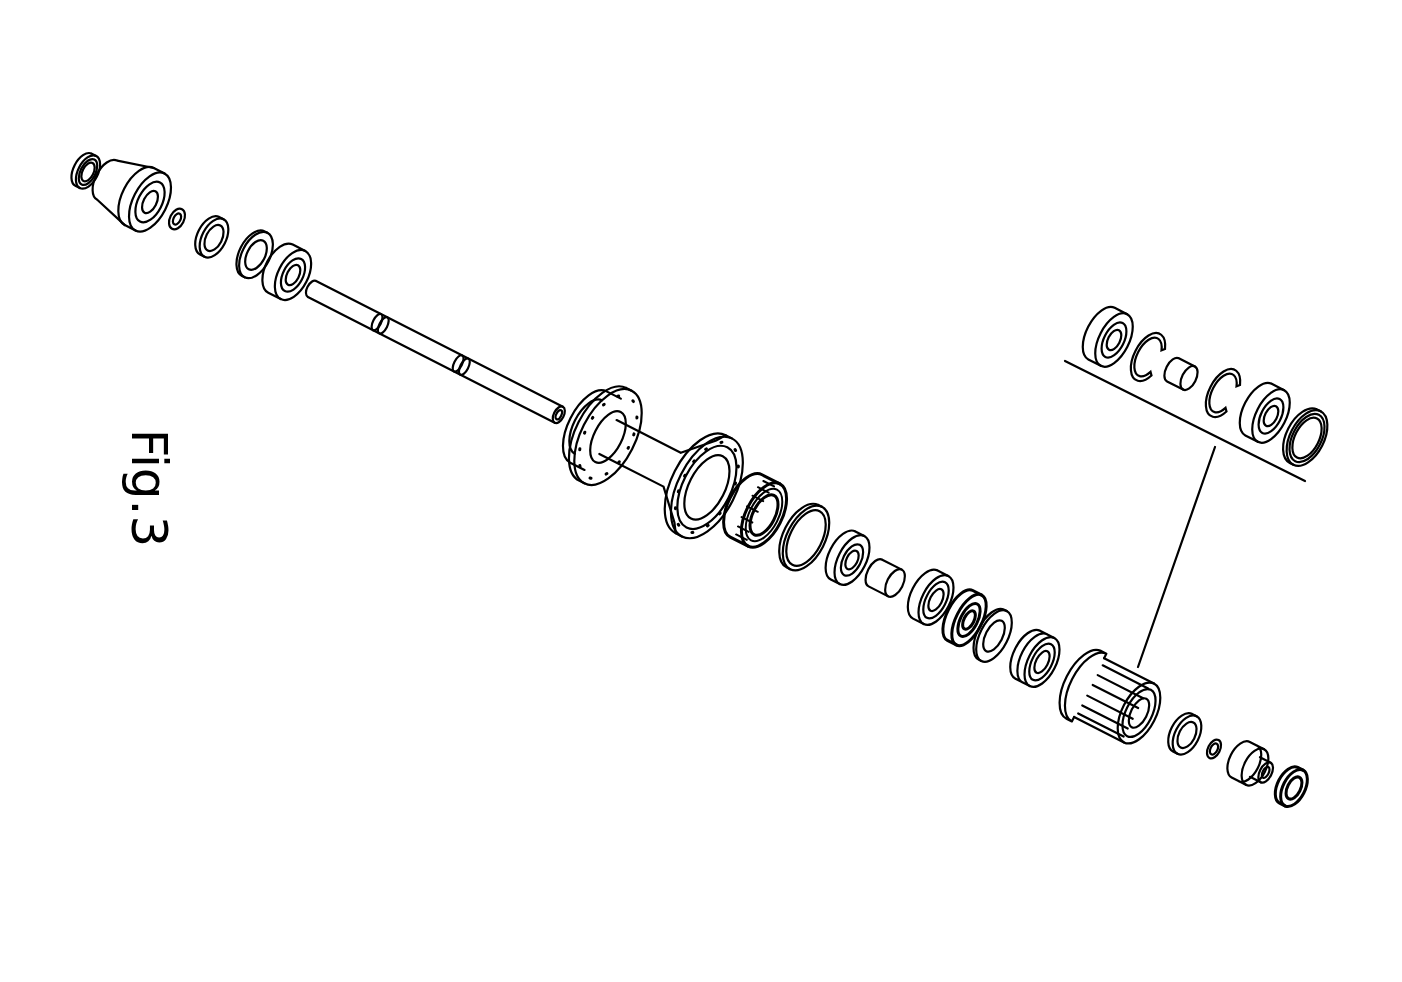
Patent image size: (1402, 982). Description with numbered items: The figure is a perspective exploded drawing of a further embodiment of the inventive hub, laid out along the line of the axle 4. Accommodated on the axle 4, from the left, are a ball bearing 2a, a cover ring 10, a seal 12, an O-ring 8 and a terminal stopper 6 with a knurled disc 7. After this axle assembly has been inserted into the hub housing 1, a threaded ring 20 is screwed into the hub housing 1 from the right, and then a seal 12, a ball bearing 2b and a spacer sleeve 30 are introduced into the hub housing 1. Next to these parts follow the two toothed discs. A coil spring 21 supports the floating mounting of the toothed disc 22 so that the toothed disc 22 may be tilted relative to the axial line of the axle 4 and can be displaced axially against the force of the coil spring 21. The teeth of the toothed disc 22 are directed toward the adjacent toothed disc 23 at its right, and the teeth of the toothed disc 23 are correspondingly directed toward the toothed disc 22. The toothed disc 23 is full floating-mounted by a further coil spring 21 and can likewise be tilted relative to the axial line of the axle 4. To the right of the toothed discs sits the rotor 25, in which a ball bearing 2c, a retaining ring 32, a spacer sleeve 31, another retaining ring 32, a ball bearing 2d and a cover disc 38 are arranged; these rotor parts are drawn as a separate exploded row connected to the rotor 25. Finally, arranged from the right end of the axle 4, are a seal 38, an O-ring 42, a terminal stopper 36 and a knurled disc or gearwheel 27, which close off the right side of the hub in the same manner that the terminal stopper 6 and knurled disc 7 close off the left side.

The hub housing 1 is at (665, 428).
The ball bearing 2a is at (308, 247).
The ball bearing 2b is at (867, 528).
The ball bearing 2c is at (1125, 305).
The ball bearing 2d is at (1287, 383).
The axle 4 is at (420, 322).
The terminal stopper 6 is at (153, 160).
The knurled disc 7 is at (97, 142).
The O-ring 8 is at (188, 200).
The cover ring 10 is at (270, 227).
The seal 12 is at (230, 212).
The threaded ring 20 is at (780, 470).
The coil spring 21 is at (940, 573).
The toothed disc 22 is at (983, 597).
The toothed disc 23 is at (1013, 620).
The rotor 25 is at (1120, 647).
The knurled disc or gearwheel 27 is at (1305, 767).
The spacer sleeve 30 is at (900, 560).
The spacer sleeve 31 is at (1193, 355).
The retaining ring 32 is at (1167, 327).
The terminal stopper 36 is at (1265, 747).
The cover disc 38 is at (1327, 402).
The O-ring 42 is at (1225, 737).